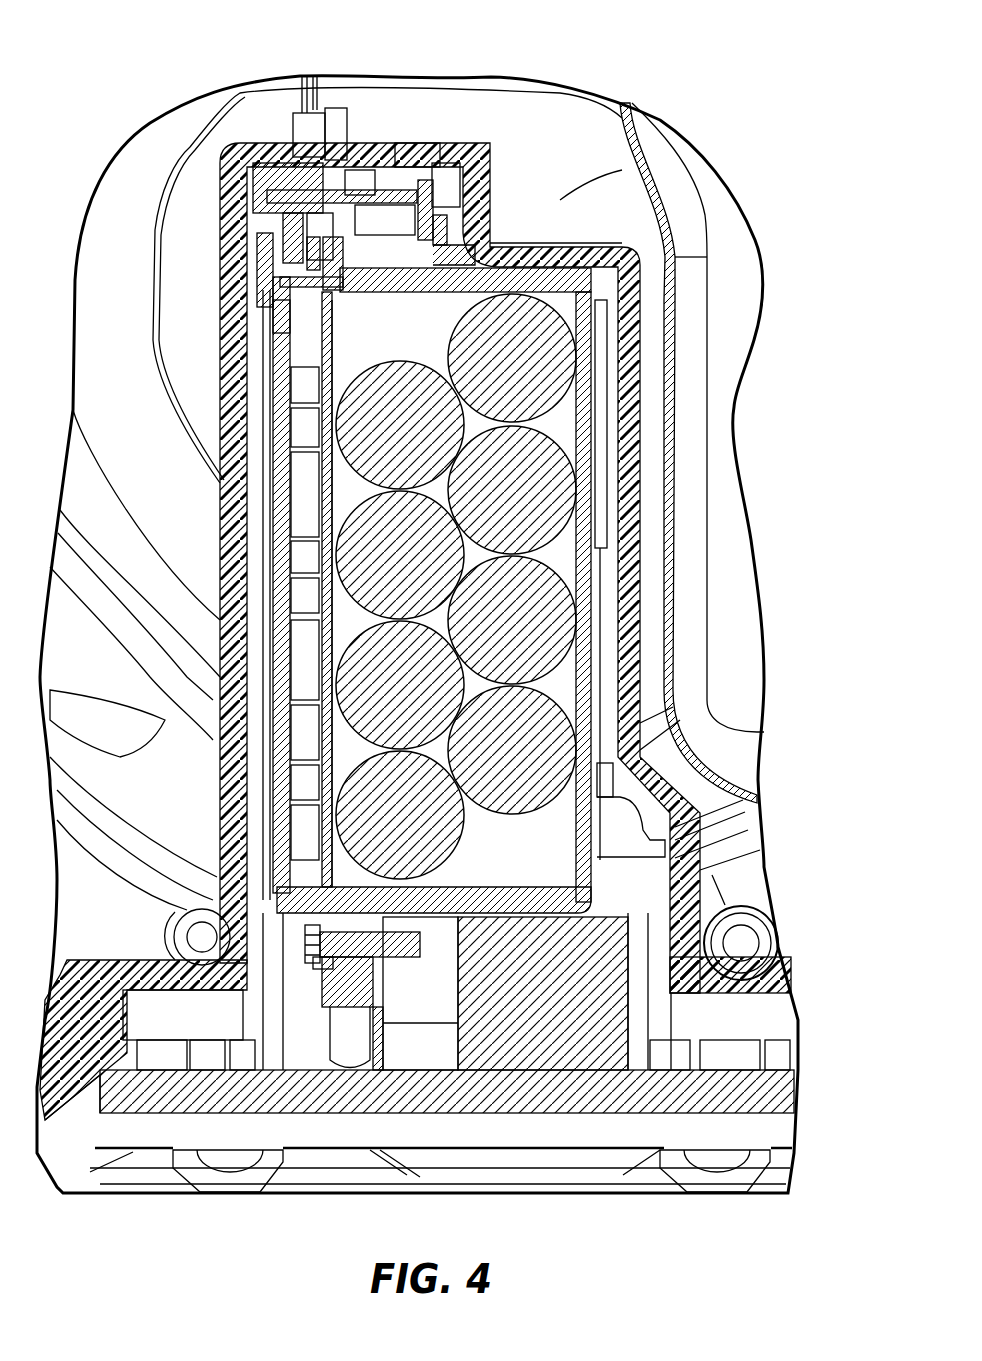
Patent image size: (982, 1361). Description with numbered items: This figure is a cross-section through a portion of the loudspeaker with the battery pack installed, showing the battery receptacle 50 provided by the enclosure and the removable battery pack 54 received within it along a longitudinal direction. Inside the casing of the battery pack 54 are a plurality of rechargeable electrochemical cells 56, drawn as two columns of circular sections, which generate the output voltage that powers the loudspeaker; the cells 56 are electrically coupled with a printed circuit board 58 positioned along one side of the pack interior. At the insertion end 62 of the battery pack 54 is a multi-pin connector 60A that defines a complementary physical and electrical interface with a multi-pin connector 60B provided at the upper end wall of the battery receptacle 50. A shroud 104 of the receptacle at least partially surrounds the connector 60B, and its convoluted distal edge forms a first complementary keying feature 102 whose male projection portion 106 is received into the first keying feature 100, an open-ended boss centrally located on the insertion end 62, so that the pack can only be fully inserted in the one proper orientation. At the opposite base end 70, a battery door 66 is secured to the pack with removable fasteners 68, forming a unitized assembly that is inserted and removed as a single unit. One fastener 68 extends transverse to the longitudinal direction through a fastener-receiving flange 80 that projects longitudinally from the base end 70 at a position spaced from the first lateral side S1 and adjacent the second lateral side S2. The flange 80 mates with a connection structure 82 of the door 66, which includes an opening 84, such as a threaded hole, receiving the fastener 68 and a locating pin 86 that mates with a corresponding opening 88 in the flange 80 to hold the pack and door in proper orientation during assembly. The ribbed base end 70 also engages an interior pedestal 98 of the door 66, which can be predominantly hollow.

The battery receptacle 50 is at (601, 440).
The removable battery pack 54 is at (610, 310).
The electrochemical cells 56 is at (410, 437).
The printed circuit board 58 is at (333, 743).
The multi-pin connector 60A is at (280, 258).
The multi-pin connector 60B is at (267, 220).
The insertion end 62 is at (545, 190).
The battery door 66 is at (160, 1127).
The removable fasteners 68 is at (320, 940).
The base end 70 is at (440, 903).
The fastener-receiving flange 80 is at (303, 920).
The connection structure 82 is at (368, 1112).
The opening 84 is at (367, 957).
The locating pin 86 is at (325, 962).
The opening 88 is at (352, 1012).
The interior pedestal 98 is at (555, 996).
The first keying feature 100 is at (462, 262).
The first complementary keying feature 102 is at (450, 237).
The shroud 104 is at (417, 150).
The male projection portion 106 is at (333, 350).
The first lateral side S1 is at (590, 877).
The second lateral side S2 is at (250, 840).